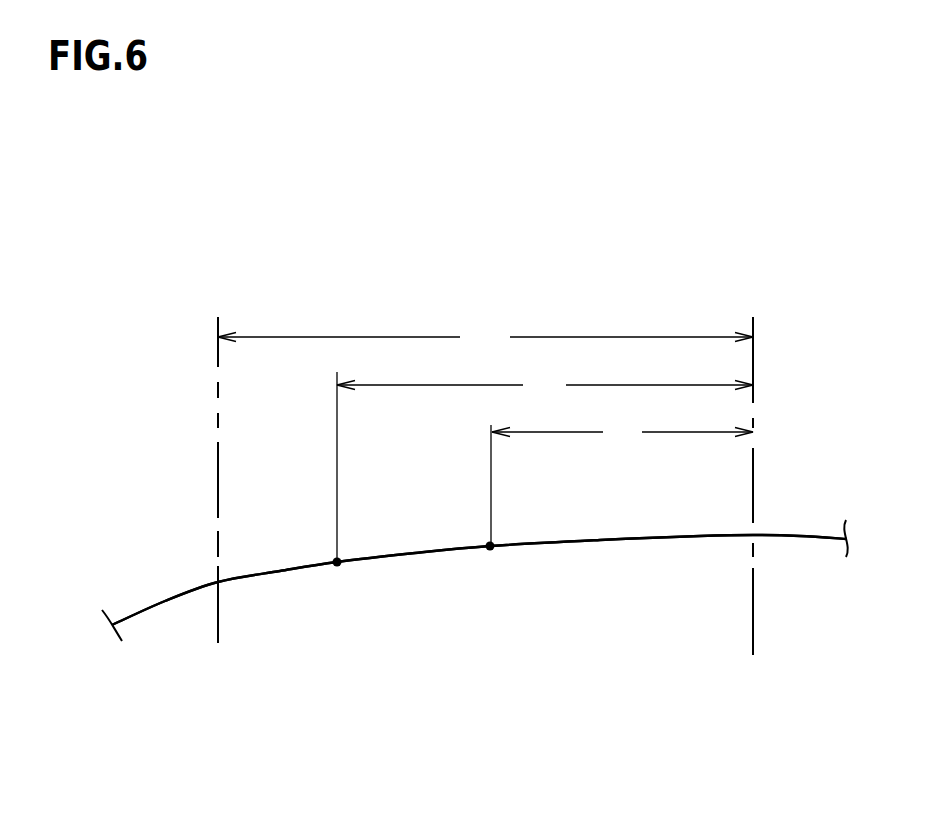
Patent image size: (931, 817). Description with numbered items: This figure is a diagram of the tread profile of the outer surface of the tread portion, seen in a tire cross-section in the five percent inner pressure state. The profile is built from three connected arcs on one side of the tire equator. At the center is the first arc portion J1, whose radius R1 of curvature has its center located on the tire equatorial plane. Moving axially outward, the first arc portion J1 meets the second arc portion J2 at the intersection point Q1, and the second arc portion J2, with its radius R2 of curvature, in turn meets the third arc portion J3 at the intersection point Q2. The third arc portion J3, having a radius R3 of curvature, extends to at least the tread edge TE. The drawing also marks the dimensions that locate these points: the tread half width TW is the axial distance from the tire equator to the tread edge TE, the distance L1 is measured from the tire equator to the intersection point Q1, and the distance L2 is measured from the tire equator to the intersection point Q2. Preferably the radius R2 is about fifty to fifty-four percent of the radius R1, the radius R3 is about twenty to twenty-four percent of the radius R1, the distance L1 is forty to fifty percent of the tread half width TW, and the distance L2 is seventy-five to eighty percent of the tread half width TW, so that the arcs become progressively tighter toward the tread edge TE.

The tread edge TE is at (216, 480).
The third arc portion J3 is at (252, 574).
The second arc portion J2 is at (389, 556).
The first arc portion J1 is at (601, 540).
The radius of curvature of third arc portion R3 is at (287, 589).
The radius of curvature of second arc portion R2 is at (425, 573).
The radius of curvature of first arc portion R1 is at (632, 556).
The intersection point Q2 is at (337, 563).
The intersection point Q1 is at (490, 547).
The tread half width TW is at (485, 337).
The distance from tire equator to intersection point Q2 L2 is at (545, 466).
The distance from tire equator to intersection point Q1 L1 is at (622, 482).